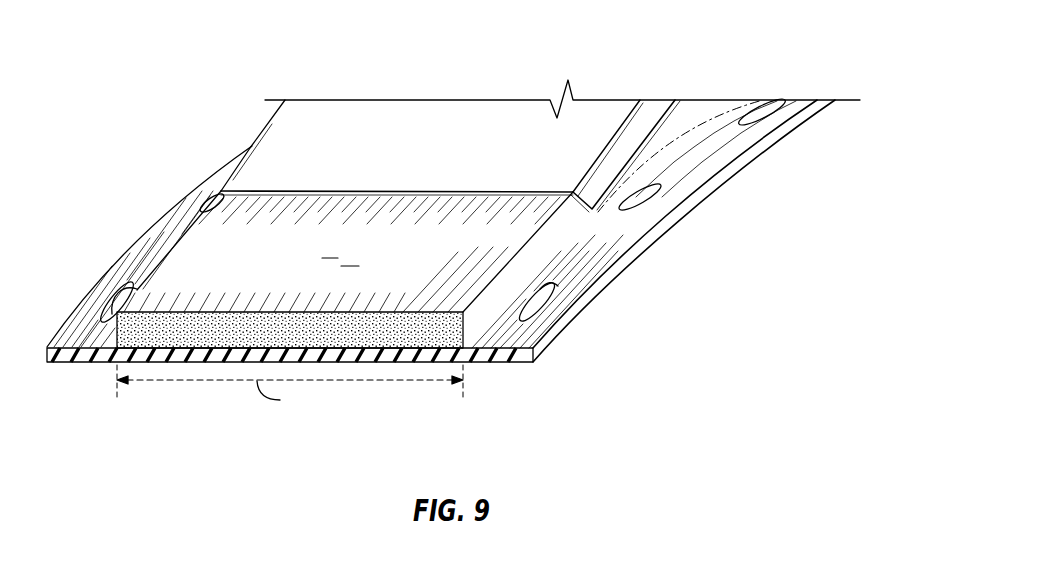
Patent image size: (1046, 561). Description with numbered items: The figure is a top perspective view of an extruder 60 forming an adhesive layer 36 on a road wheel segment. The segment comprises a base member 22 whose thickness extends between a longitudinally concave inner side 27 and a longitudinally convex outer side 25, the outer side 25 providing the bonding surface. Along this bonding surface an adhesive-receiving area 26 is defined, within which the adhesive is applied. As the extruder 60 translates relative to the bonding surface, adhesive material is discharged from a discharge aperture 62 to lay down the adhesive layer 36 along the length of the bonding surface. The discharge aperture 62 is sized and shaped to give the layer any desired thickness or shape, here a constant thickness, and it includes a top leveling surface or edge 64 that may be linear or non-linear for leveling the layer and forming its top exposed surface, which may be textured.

The base member 22 is at (693, 187).
The longitudinally convex outer side 25 is at (546, 312).
The adhesive-receiving area 26 is at (692, 112).
The longitudinally concave inner side 27 is at (508, 364).
The adhesive layer 36 is at (185, 258).
The extruder 60 is at (378, 110).
The discharge aperture 62 is at (585, 208).
The top leveling surface or edge 64 is at (456, 199).